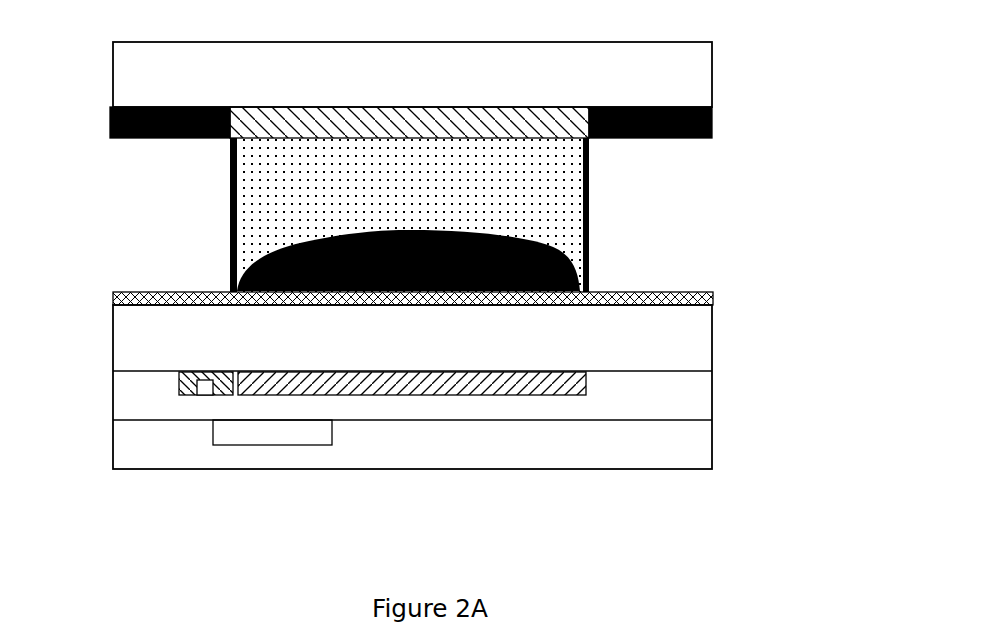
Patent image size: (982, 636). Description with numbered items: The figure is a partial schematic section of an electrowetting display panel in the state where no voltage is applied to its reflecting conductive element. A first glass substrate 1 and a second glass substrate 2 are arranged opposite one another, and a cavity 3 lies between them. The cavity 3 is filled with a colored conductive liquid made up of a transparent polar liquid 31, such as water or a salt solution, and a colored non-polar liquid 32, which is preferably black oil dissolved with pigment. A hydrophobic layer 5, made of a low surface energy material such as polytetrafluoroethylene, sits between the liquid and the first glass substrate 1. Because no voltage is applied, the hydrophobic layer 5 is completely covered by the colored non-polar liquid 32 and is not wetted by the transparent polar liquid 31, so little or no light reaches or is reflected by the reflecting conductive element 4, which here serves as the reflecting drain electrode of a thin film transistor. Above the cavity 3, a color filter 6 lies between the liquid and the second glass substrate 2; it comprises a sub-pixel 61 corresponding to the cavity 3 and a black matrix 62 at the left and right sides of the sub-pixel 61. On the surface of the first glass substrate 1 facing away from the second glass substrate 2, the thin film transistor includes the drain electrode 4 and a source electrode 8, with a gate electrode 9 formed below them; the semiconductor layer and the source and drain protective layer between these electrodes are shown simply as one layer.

The first glass substrate 1 is at (713, 348).
The second glass substrate 2 is at (700, 83).
The cavity 3 is at (413, 215).
The transparent polar liquid 31 is at (282, 190).
The colored non-polar liquid 32 is at (230, 269).
The reflecting conductive element 4 is at (522, 393).
The hydrophobic layer 5 is at (713, 298).
The color filter 6 is at (477, 136).
The sub-pixel 61 is at (587, 140).
The black matrix 62 is at (710, 128).
The source electrode 8 is at (178, 380).
The gate electrode 9 is at (293, 433).